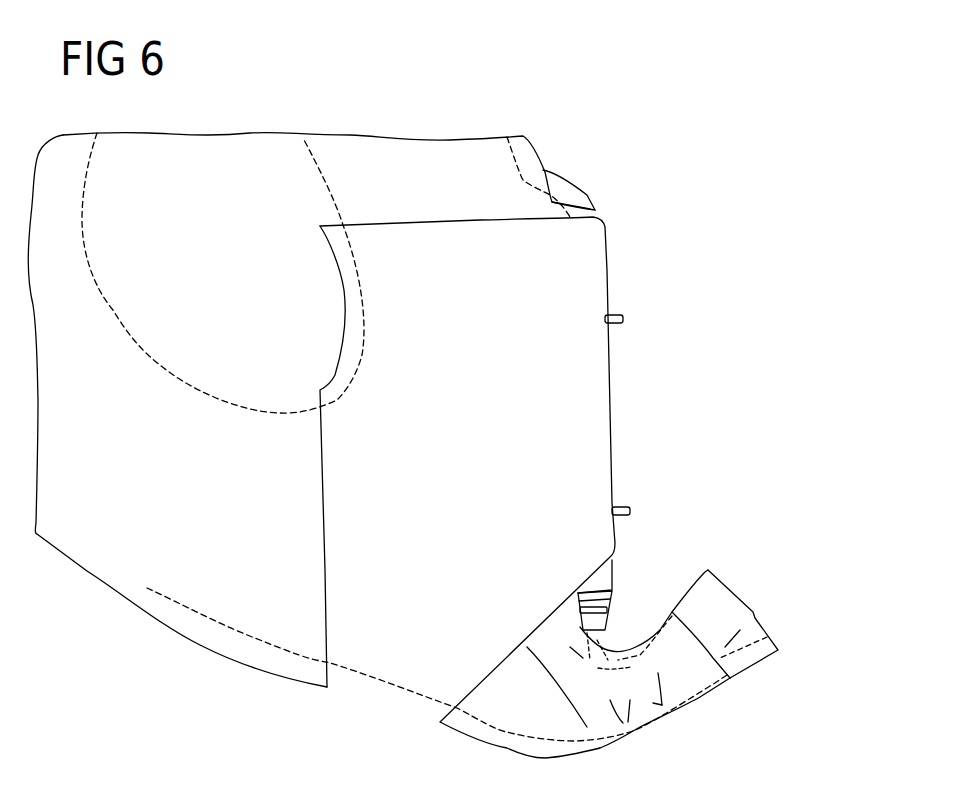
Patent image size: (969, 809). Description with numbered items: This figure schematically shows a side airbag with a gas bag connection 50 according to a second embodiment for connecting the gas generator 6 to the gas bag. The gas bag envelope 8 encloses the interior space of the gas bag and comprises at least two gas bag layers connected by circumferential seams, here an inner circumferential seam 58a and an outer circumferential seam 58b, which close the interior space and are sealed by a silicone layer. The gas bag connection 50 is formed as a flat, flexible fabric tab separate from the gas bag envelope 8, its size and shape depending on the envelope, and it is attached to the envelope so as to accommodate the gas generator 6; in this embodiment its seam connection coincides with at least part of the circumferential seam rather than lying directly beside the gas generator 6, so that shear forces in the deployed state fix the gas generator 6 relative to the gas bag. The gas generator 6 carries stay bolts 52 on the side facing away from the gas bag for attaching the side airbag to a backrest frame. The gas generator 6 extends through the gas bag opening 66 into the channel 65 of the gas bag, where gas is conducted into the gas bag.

The gas bag envelope 8 is at (200, 510).
The gas bag connection 50 is at (473, 518).
The inner circumferential seam 58a is at (353, 373).
The outer circumferential seam 58b is at (363, 673).
The stay bolts 52 is at (622, 313).
The gas generator 6 is at (603, 573).
The channel 65 is at (678, 680).
The gas bag opening 66 is at (723, 603).